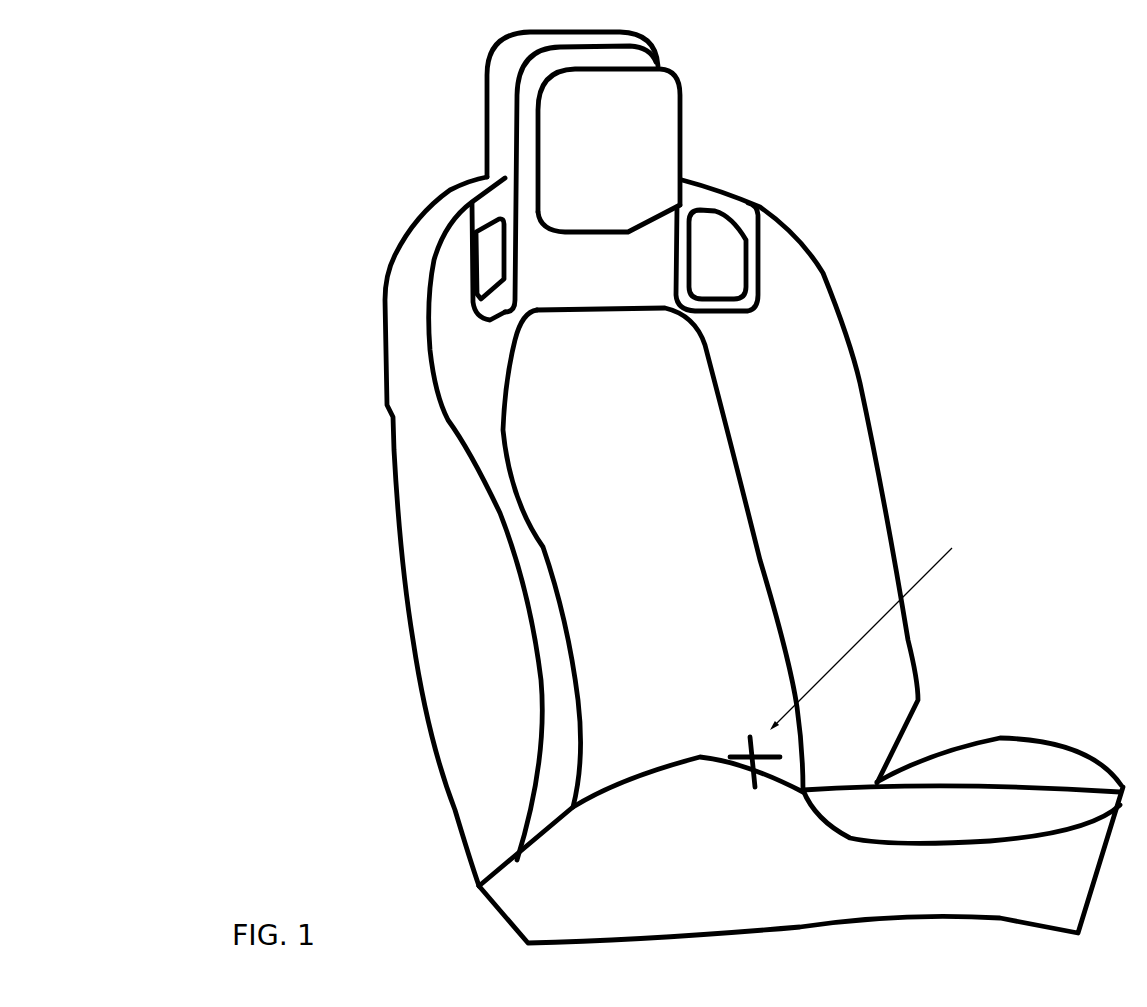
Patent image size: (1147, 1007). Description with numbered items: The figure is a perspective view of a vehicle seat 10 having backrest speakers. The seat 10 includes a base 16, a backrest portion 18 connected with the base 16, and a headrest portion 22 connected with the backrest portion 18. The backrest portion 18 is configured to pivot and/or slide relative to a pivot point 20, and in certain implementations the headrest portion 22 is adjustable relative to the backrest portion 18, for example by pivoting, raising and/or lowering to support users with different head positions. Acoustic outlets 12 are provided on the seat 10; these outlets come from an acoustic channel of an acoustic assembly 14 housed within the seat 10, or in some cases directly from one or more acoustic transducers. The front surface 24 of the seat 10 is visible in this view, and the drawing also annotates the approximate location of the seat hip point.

The seat 10 is at (278, 113).
The acoustic outlets 12 is at (483, 257).
The acoustic assembly 14 is at (722, 173).
The base 16 is at (435, 883).
The backrest portion 18 is at (348, 382).
The pivot point 20 is at (940, 747).
The headrest portion 22 is at (462, 97).
The front surface 24 is at (734, 335).